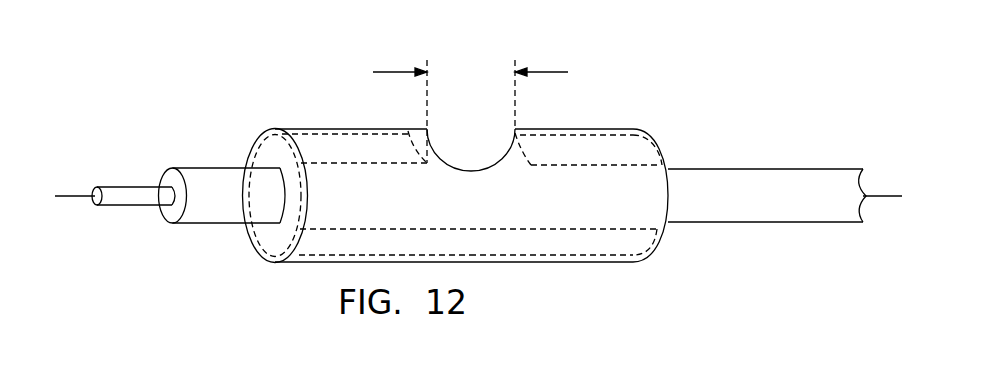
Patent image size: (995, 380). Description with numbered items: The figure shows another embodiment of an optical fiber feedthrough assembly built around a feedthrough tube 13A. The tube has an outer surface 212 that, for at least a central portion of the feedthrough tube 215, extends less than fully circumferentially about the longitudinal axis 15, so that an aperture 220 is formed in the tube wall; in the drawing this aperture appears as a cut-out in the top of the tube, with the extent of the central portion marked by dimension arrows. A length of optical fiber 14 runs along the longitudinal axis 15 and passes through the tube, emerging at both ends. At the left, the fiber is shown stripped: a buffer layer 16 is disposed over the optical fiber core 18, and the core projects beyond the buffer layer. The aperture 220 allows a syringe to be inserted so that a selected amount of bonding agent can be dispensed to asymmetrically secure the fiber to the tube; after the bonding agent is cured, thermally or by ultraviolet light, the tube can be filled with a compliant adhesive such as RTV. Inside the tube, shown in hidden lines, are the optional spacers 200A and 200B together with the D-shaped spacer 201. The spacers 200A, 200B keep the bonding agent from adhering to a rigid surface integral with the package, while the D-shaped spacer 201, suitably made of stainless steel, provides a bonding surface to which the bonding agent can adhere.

The longitudinal axis 15 is at (83, 197).
The optical fiber core 18 is at (118, 192).
The buffer layer 16 is at (169, 212).
The "D" shaped spacer 201 is at (250, 245).
The outer surface 212 is at (540, 210).
The feedthrough tube 13A is at (666, 229).
The aperture 220 is at (463, 145).
The spacer 200A is at (308, 138).
The spacer 200B is at (600, 147).
The central portion of the feedthrough tube 215 is at (412, 72).
The length of optical fiber 14 is at (688, 182).